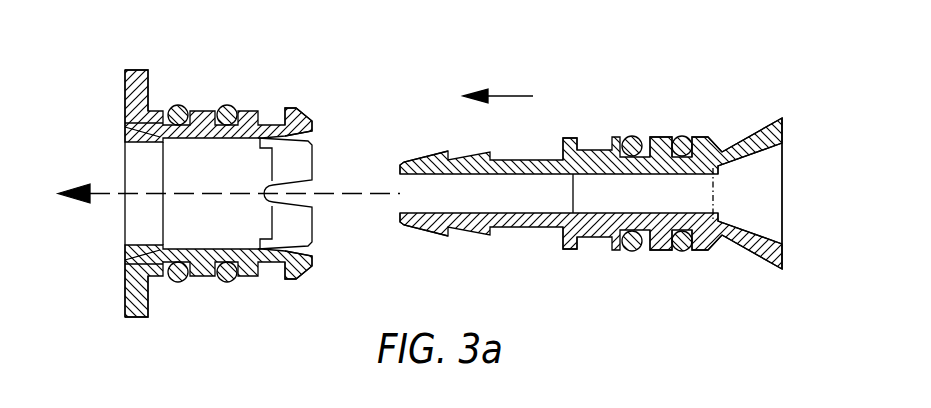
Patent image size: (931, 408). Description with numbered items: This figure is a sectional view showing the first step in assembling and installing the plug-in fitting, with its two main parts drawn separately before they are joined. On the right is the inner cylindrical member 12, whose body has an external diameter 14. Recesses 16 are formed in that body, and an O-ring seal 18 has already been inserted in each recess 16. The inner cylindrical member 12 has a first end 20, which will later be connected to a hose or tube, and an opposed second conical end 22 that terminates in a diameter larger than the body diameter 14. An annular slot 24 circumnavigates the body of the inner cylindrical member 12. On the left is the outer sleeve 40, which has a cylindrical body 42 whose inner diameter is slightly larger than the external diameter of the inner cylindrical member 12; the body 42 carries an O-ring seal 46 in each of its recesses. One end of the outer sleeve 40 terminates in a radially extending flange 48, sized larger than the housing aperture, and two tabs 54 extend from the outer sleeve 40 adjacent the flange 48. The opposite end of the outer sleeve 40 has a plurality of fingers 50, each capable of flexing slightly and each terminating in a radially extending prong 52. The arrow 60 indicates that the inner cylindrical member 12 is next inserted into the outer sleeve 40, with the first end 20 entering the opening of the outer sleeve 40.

The inner cylindrical member 12 is at (634, 302).
The external diameter 14 is at (658, 137).
The recess 16 is at (703, 137).
The O-ring seal 18 is at (632, 136).
The first end 20 is at (400, 172).
The second conical end 22 is at (748, 140).
The annular slot 24 is at (595, 147).
The outer sleeve 40 is at (150, 353).
The cylindrical body 42 is at (202, 110).
The O-ring seal 46 is at (229, 106).
The radially extending flange 48 is at (124, 100).
The finger 50 is at (270, 263).
The radially extending prong 52 is at (306, 113).
The tab 54 is at (126, 142).
The arrow 60 is at (508, 96).